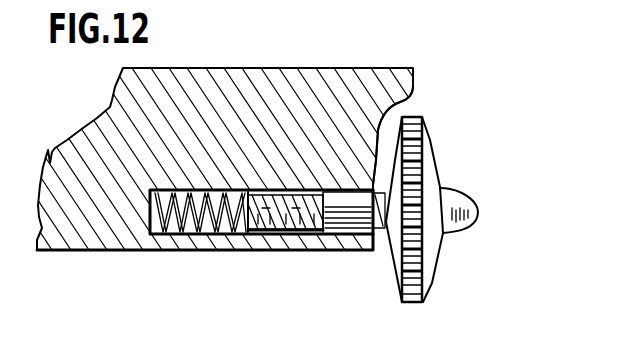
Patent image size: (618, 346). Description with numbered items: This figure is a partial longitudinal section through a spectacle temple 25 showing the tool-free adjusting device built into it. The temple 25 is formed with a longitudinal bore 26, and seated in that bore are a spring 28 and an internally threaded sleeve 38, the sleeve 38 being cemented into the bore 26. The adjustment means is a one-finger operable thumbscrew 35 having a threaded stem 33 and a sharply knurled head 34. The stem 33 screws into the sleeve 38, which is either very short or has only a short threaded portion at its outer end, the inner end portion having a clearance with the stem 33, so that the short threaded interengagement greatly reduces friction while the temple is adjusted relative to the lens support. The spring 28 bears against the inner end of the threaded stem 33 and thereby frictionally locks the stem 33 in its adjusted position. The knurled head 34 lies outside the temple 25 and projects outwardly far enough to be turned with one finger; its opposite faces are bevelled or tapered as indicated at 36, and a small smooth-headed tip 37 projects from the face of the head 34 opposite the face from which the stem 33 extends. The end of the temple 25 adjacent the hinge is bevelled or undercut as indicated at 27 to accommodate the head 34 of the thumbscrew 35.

The temple 25 is at (263, 77).
The longitudinal bore 26 is at (184, 230).
The bevelled or undercut end 27 is at (410, 106).
The spring 28 is at (224, 224).
The threaded stem 33 is at (295, 205).
The knurled head 34 is at (413, 303).
The thumbscrew 35 is at (436, 209).
The bevelled or tapered faces 36 is at (437, 246).
The tip 37 is at (460, 200).
The internally threaded sleeve 38 is at (343, 252).